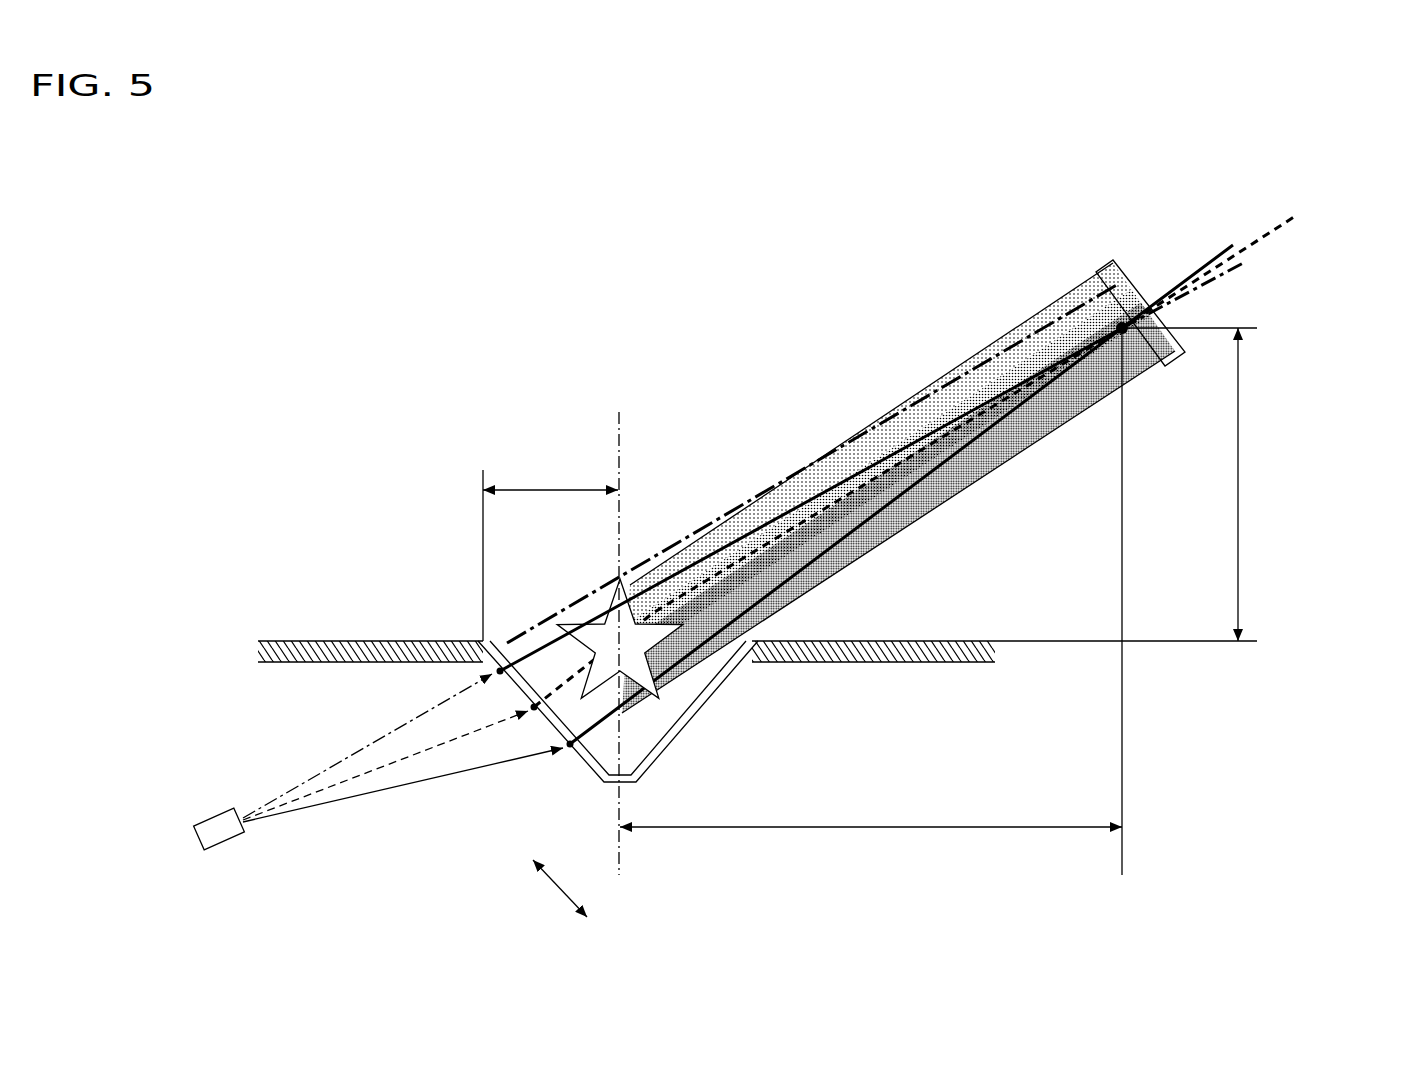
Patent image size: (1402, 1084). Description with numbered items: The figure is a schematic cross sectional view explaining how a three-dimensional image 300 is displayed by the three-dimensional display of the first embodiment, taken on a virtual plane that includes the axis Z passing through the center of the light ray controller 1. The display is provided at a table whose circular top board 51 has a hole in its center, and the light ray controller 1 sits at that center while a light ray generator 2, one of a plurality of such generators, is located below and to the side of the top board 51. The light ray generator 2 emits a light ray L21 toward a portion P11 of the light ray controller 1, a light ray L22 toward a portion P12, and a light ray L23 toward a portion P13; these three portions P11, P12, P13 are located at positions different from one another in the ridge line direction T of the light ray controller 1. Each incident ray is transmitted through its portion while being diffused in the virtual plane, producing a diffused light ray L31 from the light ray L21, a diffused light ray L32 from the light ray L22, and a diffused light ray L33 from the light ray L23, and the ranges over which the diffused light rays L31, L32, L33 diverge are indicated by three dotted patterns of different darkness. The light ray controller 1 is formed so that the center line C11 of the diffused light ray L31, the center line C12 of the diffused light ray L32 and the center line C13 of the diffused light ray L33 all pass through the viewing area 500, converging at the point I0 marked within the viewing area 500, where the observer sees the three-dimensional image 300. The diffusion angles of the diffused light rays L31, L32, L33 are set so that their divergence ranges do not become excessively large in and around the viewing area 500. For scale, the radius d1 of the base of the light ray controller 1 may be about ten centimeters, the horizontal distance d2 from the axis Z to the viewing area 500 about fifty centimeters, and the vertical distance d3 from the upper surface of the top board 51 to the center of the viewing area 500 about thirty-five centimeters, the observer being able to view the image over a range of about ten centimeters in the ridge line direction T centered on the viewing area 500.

The light ray controller 1 is at (703, 711).
The light ray generator 2 is at (233, 840).
The top board 51 is at (323, 641).
The three-dimensional image 300 is at (590, 647).
The viewing area 500 is at (1077, 285).
The portion P11 is at (490, 671).
The portion P12 is at (533, 710).
The portion P13 is at (570, 748).
The light ray L21 is at (421, 707).
The light ray L22 is at (373, 752).
The light ray L23 is at (423, 783).
The diffused light ray L31 is at (943, 388).
The diffused light ray L32 is at (853, 427).
The diffused light ray L33 is at (1003, 468).
The center line C11 is at (1238, 268).
The center line C12 is at (1281, 219).
The center line C13 is at (1210, 258).
The image point I0 is at (1127, 310).
The axis Z is at (617, 428).
The ridge line direction T is at (560, 896).
The radius d1 is at (550, 546).
The distance d2 is at (871, 601).
The distance d3 is at (1203, 484).